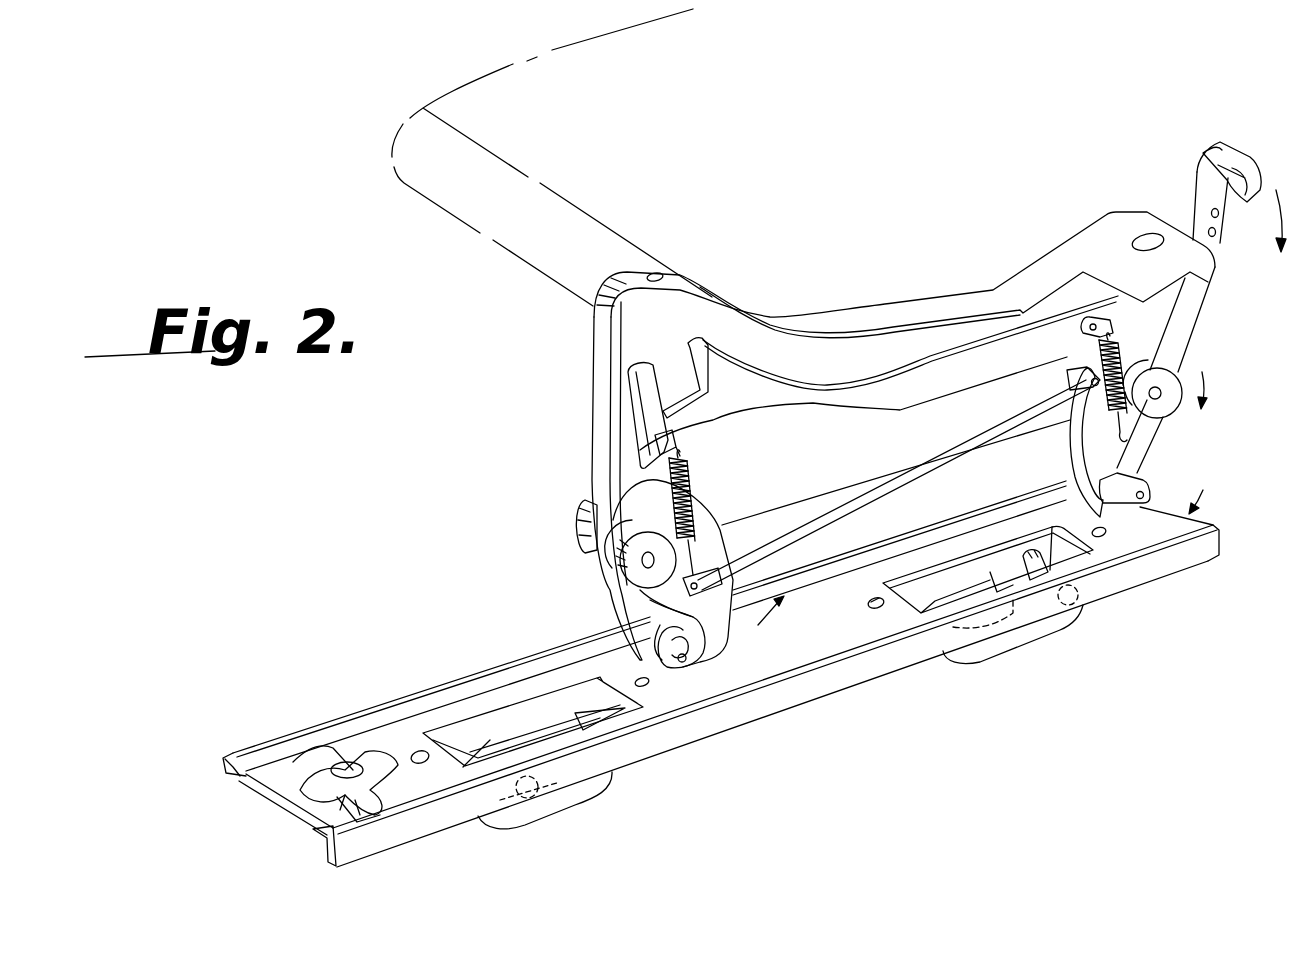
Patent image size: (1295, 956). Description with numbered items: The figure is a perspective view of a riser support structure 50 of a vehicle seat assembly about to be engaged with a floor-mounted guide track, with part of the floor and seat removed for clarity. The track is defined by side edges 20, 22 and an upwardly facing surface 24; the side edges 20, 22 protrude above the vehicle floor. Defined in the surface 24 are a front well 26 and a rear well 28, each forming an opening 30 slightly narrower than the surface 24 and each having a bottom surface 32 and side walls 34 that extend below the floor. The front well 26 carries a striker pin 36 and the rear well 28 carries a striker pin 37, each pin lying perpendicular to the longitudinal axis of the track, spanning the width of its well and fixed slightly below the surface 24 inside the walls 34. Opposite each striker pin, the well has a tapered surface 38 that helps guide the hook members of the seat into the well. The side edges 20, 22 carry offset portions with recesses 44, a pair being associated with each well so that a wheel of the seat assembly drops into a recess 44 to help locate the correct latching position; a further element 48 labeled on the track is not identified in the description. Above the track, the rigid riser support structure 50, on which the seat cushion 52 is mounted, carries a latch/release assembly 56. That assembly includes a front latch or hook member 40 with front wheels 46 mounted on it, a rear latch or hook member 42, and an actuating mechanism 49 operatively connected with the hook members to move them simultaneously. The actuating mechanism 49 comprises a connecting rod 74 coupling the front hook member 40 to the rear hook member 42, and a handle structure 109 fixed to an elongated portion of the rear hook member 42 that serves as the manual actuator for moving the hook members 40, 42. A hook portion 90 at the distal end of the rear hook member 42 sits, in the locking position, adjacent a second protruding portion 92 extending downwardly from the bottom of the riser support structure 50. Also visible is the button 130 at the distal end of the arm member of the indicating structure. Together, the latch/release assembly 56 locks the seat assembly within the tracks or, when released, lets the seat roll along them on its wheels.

The side edge 20 is at (320, 830).
The side edge 22 is at (237, 780).
The surface 24 is at (281, 772).
The front well 26 is at (595, 790).
The rear well 28 is at (1035, 633).
The opening 30 is at (550, 700).
The bottom surface 32 is at (520, 817).
The side walls 34 is at (500, 727).
The striker pin 36 is at (473, 747).
The striker pin 37 is at (1079, 590).
The tapered surface 38 is at (623, 708).
The front latch or hook member 40 is at (700, 508).
The rear latch or hook member 42 is at (1083, 443).
The recesses 44 is at (392, 800).
The front wheel members 46 is at (583, 528).
The retainer clip 48 is at (355, 770).
The actuating structure or mechanism 49 is at (1267, 133).
The riser support structure 50 is at (594, 318).
The seat cushion 52 is at (473, 213).
The latch/release assembly 56 is at (602, 580).
The connecting rod 74 is at (976, 445).
The hook portion 90 is at (1112, 507).
The second protruding portion 92 is at (1129, 474).
The handle structure 109 is at (1197, 170).
The button 130 is at (1222, 143).